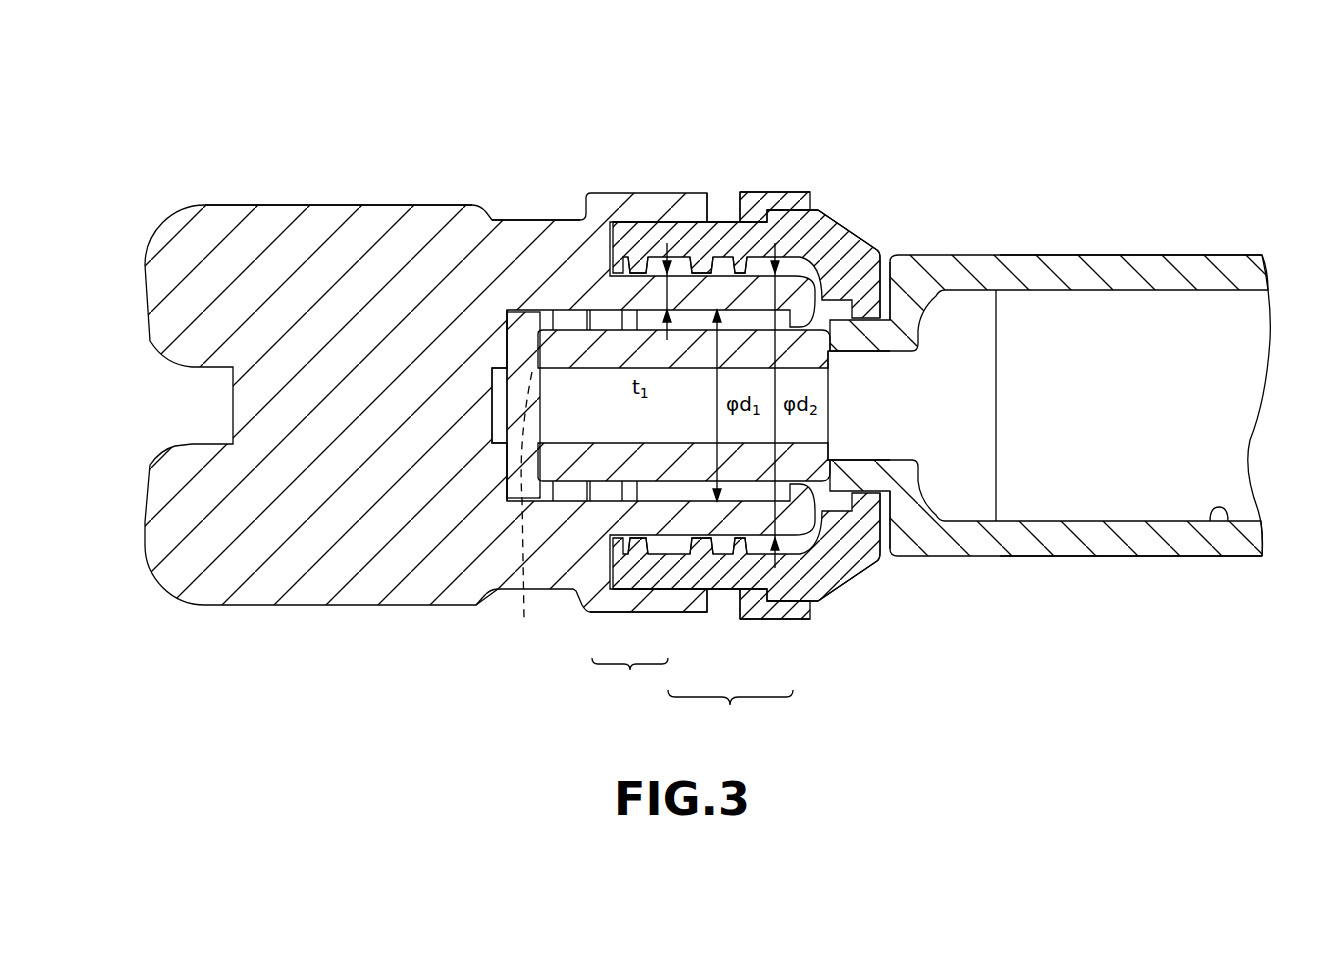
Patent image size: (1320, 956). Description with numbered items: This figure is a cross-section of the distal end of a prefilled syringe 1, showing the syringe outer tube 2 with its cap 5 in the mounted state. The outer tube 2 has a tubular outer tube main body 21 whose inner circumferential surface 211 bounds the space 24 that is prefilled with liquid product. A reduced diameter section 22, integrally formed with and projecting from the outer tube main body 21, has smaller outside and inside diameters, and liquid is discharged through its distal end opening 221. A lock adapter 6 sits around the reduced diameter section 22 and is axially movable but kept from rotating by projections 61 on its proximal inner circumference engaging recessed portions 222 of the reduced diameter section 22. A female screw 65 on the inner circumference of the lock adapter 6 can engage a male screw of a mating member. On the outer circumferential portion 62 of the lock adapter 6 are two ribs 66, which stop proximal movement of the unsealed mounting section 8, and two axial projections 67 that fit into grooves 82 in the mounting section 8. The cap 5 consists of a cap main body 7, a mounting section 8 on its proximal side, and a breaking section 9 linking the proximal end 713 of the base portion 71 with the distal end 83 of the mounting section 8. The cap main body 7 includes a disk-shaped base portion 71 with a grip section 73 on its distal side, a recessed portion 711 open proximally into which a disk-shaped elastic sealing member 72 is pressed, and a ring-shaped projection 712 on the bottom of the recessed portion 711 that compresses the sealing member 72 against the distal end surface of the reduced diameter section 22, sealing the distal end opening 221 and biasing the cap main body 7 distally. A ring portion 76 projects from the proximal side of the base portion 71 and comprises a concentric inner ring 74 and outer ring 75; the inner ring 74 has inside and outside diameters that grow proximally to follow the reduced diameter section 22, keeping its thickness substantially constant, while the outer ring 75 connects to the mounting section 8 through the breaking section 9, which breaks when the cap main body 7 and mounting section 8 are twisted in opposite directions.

The syringe 1 is at (992, 100).
The syringe outer tube 2 is at (1092, 248).
The outer tube main body 21 is at (1191, 266).
The space 24 is at (1141, 506).
The inner circumferential surface 211 is at (1216, 512).
The reduced diameter section 22 is at (602, 470).
The distal end opening 221 is at (525, 511).
The recessed portions 222 is at (891, 306).
The cap 5 is at (730, 715).
The lock adapter 6 is at (823, 605).
The projections 61 is at (864, 305).
The outer circumferential portion 62 is at (721, 221).
The female screw 65 is at (688, 266).
The ribs 66 is at (823, 202).
The projections 67 is at (799, 219).
The cap main body 7 is at (614, 200).
The base portion 71 is at (521, 231).
The sealing member 72 is at (524, 322).
The grip section 73 is at (363, 224).
The inner ring 74 is at (613, 611).
The outer ring 75 is at (664, 608).
The ring portion 76 is at (630, 677).
The recessed portion 711 is at (480, 592).
The ring-shaped projection 712 is at (433, 596).
The proximal end 713 is at (706, 216).
The mounting section 8 is at (788, 197).
The grooves 82 is at (758, 214).
The distal end 83 is at (737, 221).
The breaking section 9 is at (732, 603).